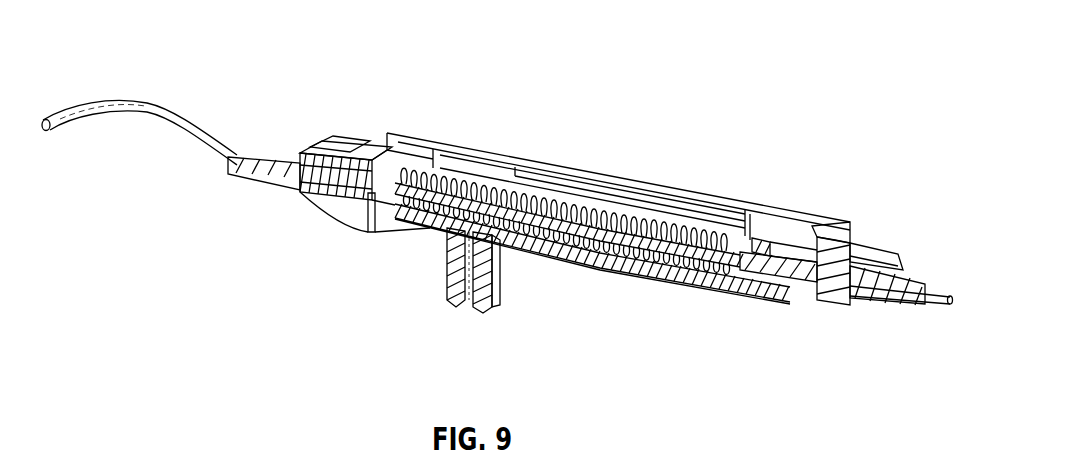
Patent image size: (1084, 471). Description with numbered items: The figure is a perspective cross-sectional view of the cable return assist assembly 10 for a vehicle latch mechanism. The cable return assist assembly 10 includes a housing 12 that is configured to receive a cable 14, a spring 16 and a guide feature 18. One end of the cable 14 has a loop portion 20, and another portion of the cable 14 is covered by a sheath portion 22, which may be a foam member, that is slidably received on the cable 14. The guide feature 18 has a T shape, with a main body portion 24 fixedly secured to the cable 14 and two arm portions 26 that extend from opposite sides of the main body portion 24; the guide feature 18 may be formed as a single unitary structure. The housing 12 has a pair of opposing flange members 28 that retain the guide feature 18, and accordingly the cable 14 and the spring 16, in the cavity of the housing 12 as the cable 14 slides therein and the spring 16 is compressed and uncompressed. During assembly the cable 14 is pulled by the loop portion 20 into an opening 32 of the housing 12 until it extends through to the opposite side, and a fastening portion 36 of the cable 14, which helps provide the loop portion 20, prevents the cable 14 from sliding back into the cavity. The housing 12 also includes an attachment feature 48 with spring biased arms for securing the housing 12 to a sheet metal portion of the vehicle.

The cable return assist assembly 10 is at (666, 158).
The housing 12 is at (417, 135).
The cable 14 is at (960, 310).
The spring 16 is at (483, 190).
The guide feature 18 is at (813, 237).
The loop portion 20 is at (150, 108).
The sheath portion 22 is at (917, 307).
The main body portion 24 is at (765, 268).
The arm portions 26 is at (777, 253).
The flange members 28 is at (537, 180).
The opening 32 is at (838, 228).
The fastening portion 36 is at (306, 150).
The attachment feature 48 is at (447, 250).